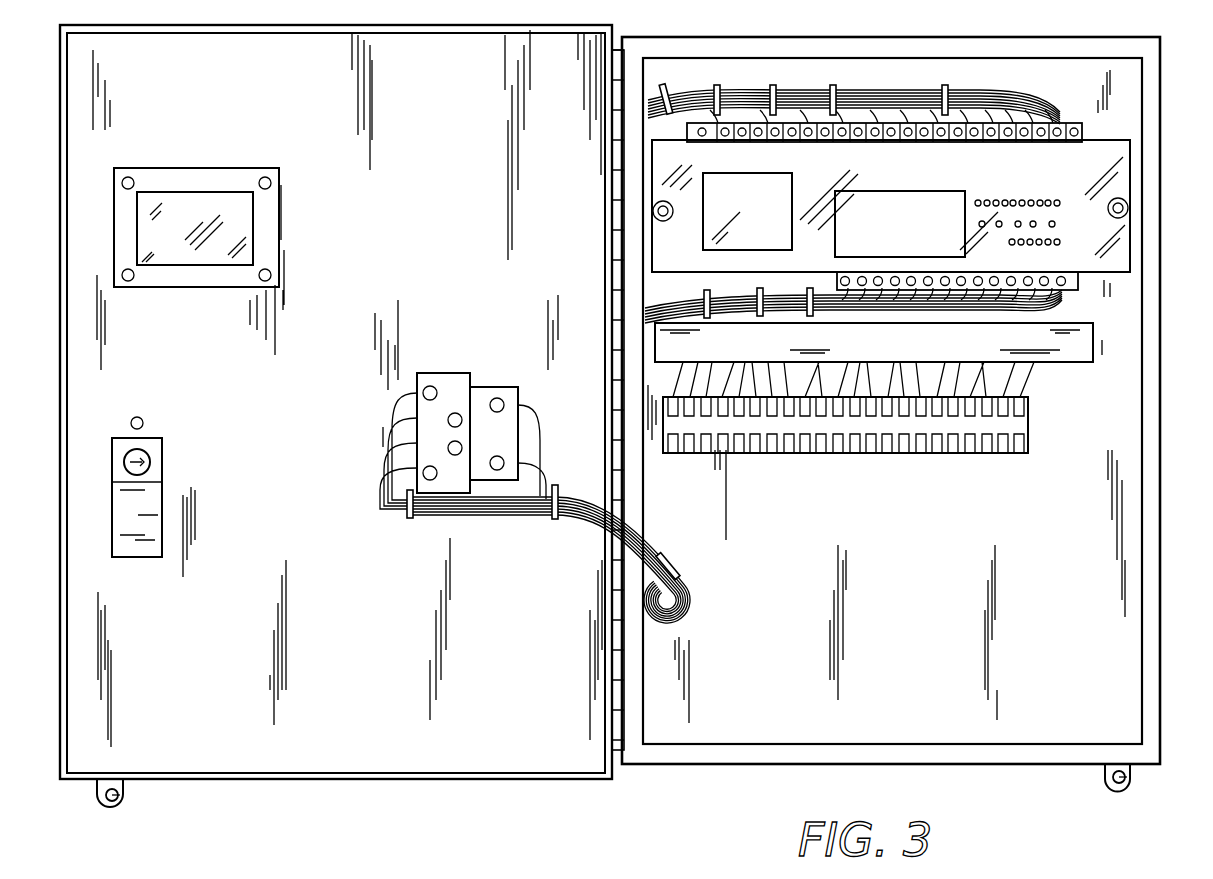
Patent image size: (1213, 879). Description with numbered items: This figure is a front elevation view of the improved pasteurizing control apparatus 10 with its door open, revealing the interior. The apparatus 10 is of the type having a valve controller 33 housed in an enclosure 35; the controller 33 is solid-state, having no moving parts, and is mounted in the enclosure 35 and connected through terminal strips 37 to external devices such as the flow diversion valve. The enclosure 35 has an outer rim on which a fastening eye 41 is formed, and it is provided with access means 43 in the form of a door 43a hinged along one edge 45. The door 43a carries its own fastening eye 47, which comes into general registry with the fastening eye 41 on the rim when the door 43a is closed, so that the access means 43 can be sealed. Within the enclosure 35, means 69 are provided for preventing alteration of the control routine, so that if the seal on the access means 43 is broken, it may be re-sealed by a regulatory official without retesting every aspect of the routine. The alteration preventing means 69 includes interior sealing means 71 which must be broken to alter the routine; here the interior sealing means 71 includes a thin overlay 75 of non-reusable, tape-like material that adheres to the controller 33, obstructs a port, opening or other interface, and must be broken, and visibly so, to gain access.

The pasteurizing control apparatus 10 is at (630, 416).
The valve controller 33 is at (926, 185).
The enclosure 35 is at (911, 411).
The terminal strips 37 is at (1085, 287).
The fastening eye 41 is at (1105, 782).
The access means 43 is at (293, 104).
The door 43a is at (614, 31).
The hinged edge 45 is at (613, 236).
The fastening eye 47 is at (125, 802).
The alteration preventing means 69 is at (893, 162).
The interior sealing means 71 is at (843, 162).
The overlay 75 is at (757, 173).